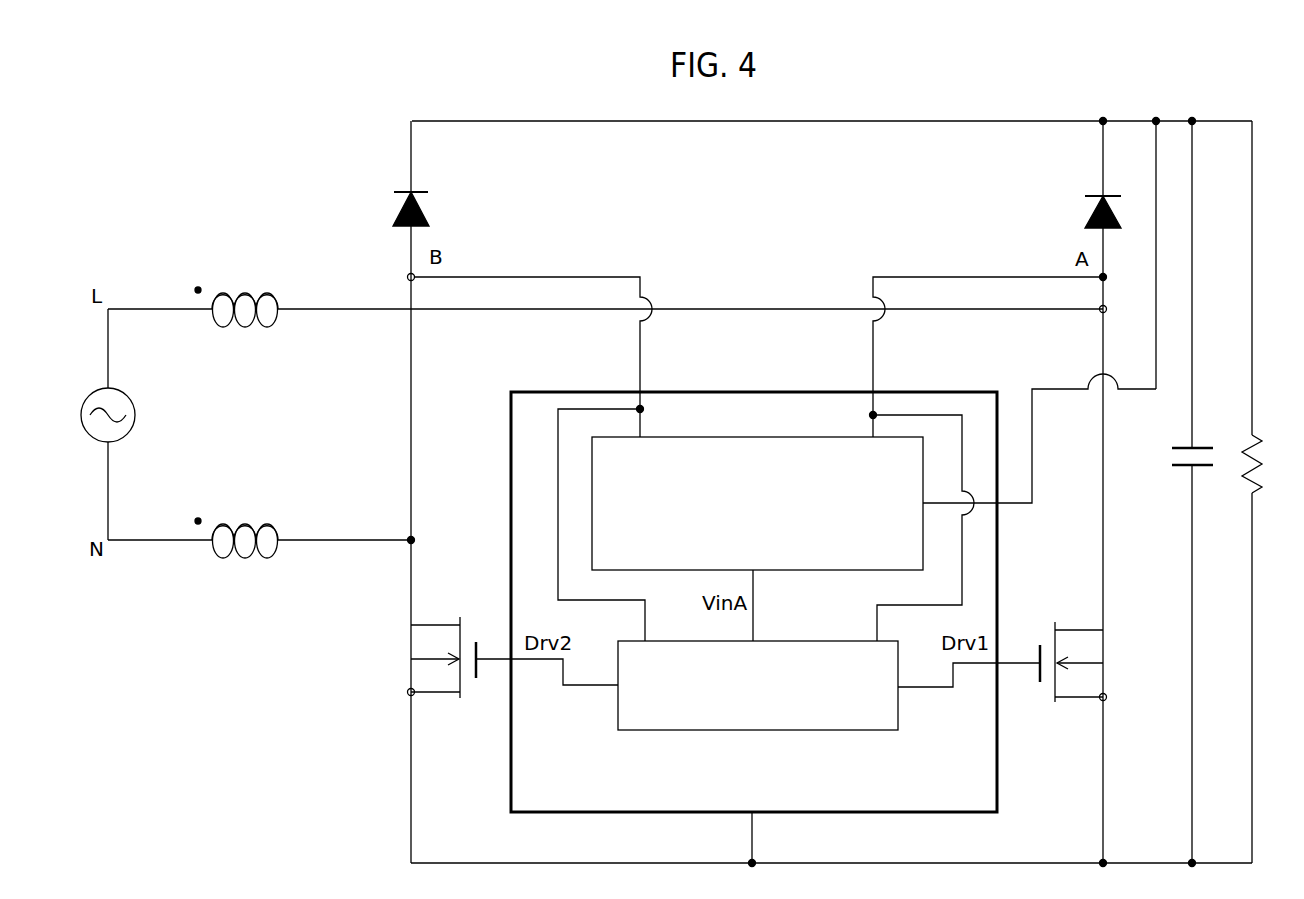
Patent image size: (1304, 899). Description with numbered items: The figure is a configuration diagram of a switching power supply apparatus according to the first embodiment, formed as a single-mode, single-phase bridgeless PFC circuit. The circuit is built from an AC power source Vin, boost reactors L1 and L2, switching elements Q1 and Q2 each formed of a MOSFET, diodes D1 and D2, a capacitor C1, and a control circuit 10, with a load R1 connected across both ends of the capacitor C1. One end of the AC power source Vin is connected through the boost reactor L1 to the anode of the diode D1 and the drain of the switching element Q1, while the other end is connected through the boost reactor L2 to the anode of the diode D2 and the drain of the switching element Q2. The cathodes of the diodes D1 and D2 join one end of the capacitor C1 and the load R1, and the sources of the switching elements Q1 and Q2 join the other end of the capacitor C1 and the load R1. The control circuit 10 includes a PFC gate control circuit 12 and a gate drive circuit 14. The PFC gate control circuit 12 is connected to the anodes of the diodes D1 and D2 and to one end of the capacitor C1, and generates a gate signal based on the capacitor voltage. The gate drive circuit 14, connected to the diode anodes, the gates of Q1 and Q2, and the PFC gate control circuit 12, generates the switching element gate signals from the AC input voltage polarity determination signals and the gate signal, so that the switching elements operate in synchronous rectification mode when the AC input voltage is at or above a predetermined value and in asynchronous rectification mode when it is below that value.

The control circuit 10 is at (510, 772).
The PFC gate control circuit 12 is at (803, 571).
The gate drive circuit 14 is at (804, 731).
The AC power source Vin is at (92, 424).
The boost reactor L1 is at (193, 294).
The boost reactor L2 is at (193, 556).
The diode D1 is at (1086, 212).
The diode D2 is at (394, 209).
The switching element Q1 is at (1090, 662).
The switching element Q2 is at (425, 657).
The capacitor C1 is at (1175, 494).
The load R1 is at (1268, 464).